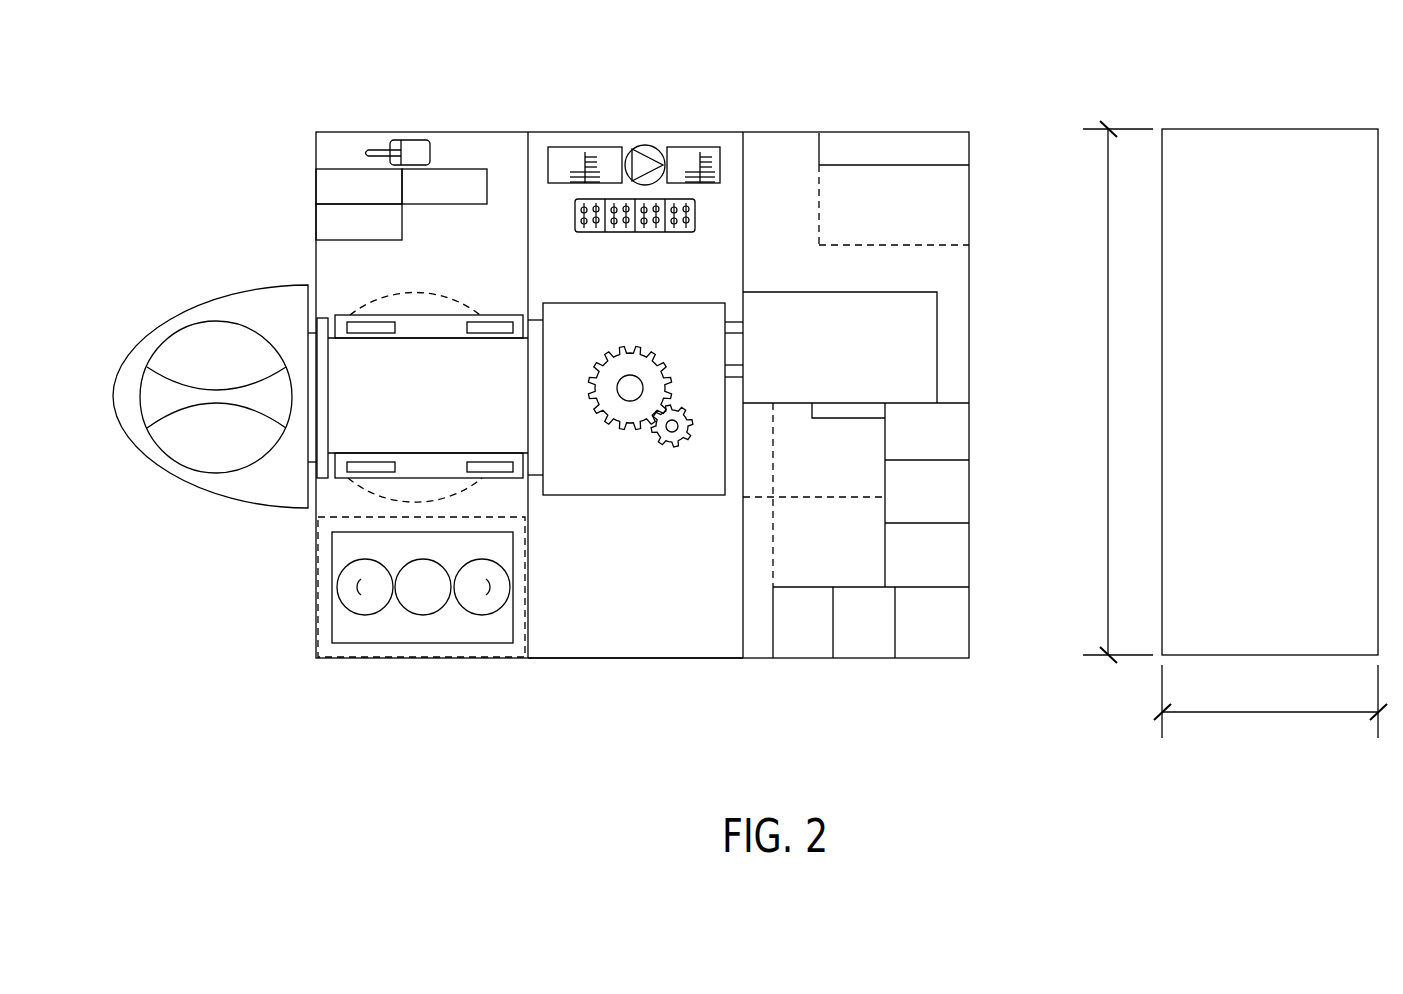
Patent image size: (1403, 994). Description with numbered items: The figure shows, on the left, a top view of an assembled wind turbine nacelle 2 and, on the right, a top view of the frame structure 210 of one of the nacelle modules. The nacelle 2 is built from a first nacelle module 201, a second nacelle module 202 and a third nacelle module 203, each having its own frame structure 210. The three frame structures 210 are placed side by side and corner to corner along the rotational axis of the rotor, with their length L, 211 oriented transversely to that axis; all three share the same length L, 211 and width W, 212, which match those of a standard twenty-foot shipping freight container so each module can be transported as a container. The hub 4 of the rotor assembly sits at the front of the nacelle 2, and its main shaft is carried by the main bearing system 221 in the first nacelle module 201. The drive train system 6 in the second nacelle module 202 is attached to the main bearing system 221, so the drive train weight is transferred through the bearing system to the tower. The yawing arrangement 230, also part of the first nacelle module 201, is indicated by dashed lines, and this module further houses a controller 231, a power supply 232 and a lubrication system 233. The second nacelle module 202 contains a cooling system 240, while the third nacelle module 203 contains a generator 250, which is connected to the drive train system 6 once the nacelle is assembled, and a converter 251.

The nacelle 2 is at (212, 112).
The hub 4 is at (208, 312).
The drive train system 6 is at (585, 485).
The first nacelle module 201 is at (403, 650).
The second nacelle module 202 is at (707, 660).
The third nacelle module 203 is at (877, 645).
The frame structure 210 is at (1270, 129).
The length L 211 is at (1108, 393).
The width W 212 is at (1270, 712).
The main bearing system 221 is at (349, 432).
The yawing arrangement 230 is at (375, 297).
The controller 231 is at (473, 177).
The power supply 232 is at (385, 178).
The lubrication system 233 is at (327, 215).
The cooling system 240 is at (655, 165).
The generator 250 is at (925, 305).
The converter 251 is at (947, 562).